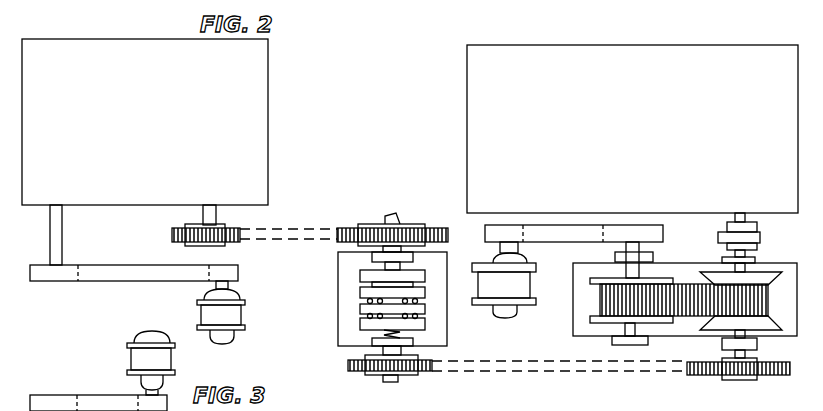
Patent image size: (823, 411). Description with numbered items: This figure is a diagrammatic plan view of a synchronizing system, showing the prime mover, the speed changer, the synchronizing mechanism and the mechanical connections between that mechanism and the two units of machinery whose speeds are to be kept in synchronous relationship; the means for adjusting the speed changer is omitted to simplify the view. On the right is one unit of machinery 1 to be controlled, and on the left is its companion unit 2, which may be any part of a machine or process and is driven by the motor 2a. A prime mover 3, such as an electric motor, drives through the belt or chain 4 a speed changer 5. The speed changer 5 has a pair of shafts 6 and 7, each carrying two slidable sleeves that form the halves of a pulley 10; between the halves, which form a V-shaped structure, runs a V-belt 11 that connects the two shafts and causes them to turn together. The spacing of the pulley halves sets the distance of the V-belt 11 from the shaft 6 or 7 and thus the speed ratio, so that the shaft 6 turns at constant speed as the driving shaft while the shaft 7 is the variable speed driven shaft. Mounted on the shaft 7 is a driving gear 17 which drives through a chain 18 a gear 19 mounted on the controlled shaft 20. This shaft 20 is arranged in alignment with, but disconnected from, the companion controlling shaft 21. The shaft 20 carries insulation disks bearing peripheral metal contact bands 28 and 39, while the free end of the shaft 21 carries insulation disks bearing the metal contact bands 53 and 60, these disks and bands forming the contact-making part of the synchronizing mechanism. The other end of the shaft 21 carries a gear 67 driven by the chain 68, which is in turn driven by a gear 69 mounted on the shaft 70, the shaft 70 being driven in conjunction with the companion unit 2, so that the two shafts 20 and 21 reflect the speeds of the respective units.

The unit of machinery 1 is at (476, 124).
The companion unit 2 is at (268, 103).
The motor 2a is at (200, 305).
The prime mover 3 is at (517, 316).
The belt or chain 4 is at (556, 240).
The speed changer 5 is at (573, 313).
The shaft 6 is at (663, 240).
The shaft 7 is at (748, 218).
The pulley 10 is at (605, 325).
The V-belt 11 is at (600, 294).
The driving gear 17 is at (707, 378).
The chain 18 is at (571, 372).
The gear 19 is at (345, 364).
The controlled shaft 20 is at (391, 382).
The controlling shaft 21 is at (394, 212).
The metal contact band 28 is at (358, 323).
The exterior band of metal 39 is at (358, 308).
The metal contact band 53 is at (358, 291).
The metal contact band 60 is at (358, 275).
The gear 67 is at (347, 228).
The chain 68 is at (281, 241).
The gear 69 is at (178, 240).
The shaft 70 is at (201, 214).